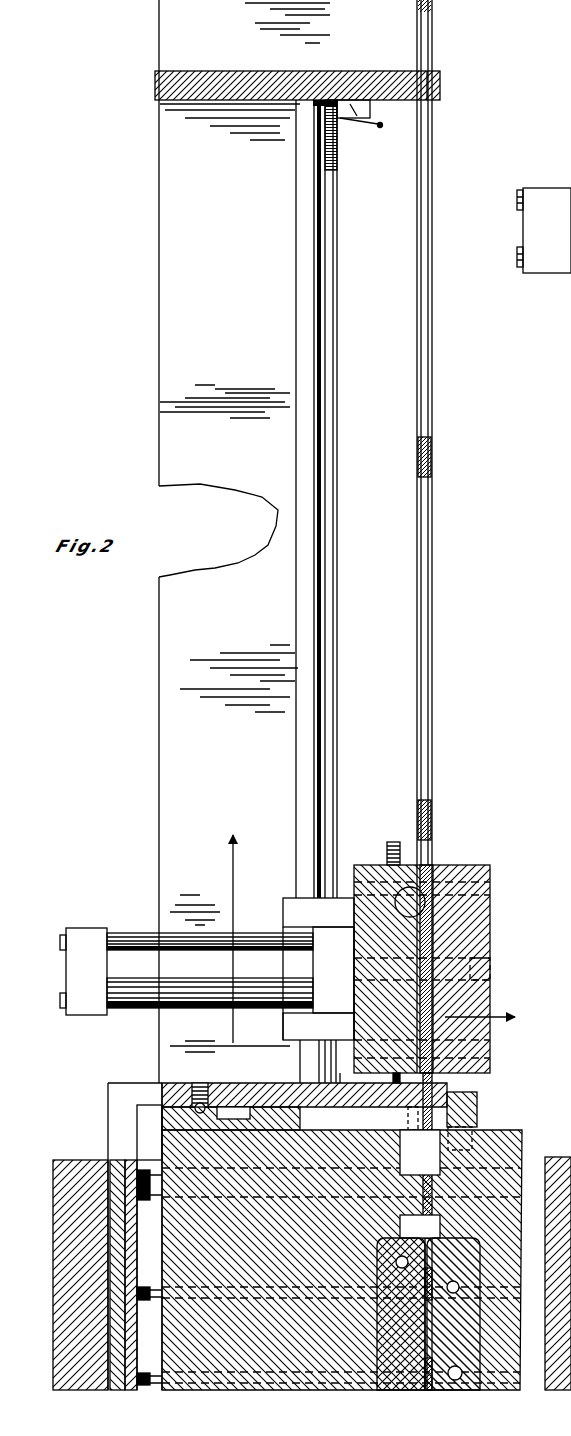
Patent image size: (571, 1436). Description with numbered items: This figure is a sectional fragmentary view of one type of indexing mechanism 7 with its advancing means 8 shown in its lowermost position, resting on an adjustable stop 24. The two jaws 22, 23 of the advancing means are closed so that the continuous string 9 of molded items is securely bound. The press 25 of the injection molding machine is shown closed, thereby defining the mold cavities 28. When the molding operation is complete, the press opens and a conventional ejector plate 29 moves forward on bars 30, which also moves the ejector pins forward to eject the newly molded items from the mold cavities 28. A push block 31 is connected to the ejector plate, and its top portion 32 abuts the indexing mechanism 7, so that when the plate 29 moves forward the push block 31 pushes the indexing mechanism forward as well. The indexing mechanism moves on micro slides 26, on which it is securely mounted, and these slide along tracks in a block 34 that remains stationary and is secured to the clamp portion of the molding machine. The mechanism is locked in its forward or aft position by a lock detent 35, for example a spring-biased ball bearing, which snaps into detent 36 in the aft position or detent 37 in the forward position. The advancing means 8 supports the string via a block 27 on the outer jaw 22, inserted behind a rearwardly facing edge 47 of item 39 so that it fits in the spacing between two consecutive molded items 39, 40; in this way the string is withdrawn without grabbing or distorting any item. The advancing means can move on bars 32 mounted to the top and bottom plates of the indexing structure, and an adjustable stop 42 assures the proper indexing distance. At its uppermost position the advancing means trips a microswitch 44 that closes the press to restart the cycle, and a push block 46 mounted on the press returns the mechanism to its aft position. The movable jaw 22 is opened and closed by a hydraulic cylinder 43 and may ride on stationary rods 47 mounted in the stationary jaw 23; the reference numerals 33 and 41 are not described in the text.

The indexing mechanism 7 is at (153, 640).
The advancing means 8 is at (503, 884).
The continuous string of molded items 9 is at (436, 452).
The outer jaw 22 is at (470, 985).
The stationary jaw 23 is at (350, 980).
The adjustable stop 24 is at (393, 1078).
The press 25 is at (497, 1132).
The micro slides 26 is at (162, 1092).
The block 27 is at (432, 950).
The mold cavities 28 is at (441, 1312).
The ejector plate 29 is at (130, 1250).
The bars 30 is at (148, 1175).
The push block 31 is at (112, 1150).
The bars 32 is at (305, 362).
The frame 33 is at (148, 1094).
The block 34 is at (280, 1103).
The lock detent 35 is at (193, 1084).
The detent 36 is at (200, 1113).
The detent 37 is at (240, 1120).
The molded item 39 is at (418, 923).
The molded item 40 is at (352, 1022).
The seal rings 41 is at (142, 1375).
The adjustable stop 42 is at (395, 840).
The hydraulic cylinder 43 is at (140, 960).
The microswitch 44 is at (385, 72).
The push block 46 is at (478, 1103).
The rearwardly facing edge 47 is at (416, 890).